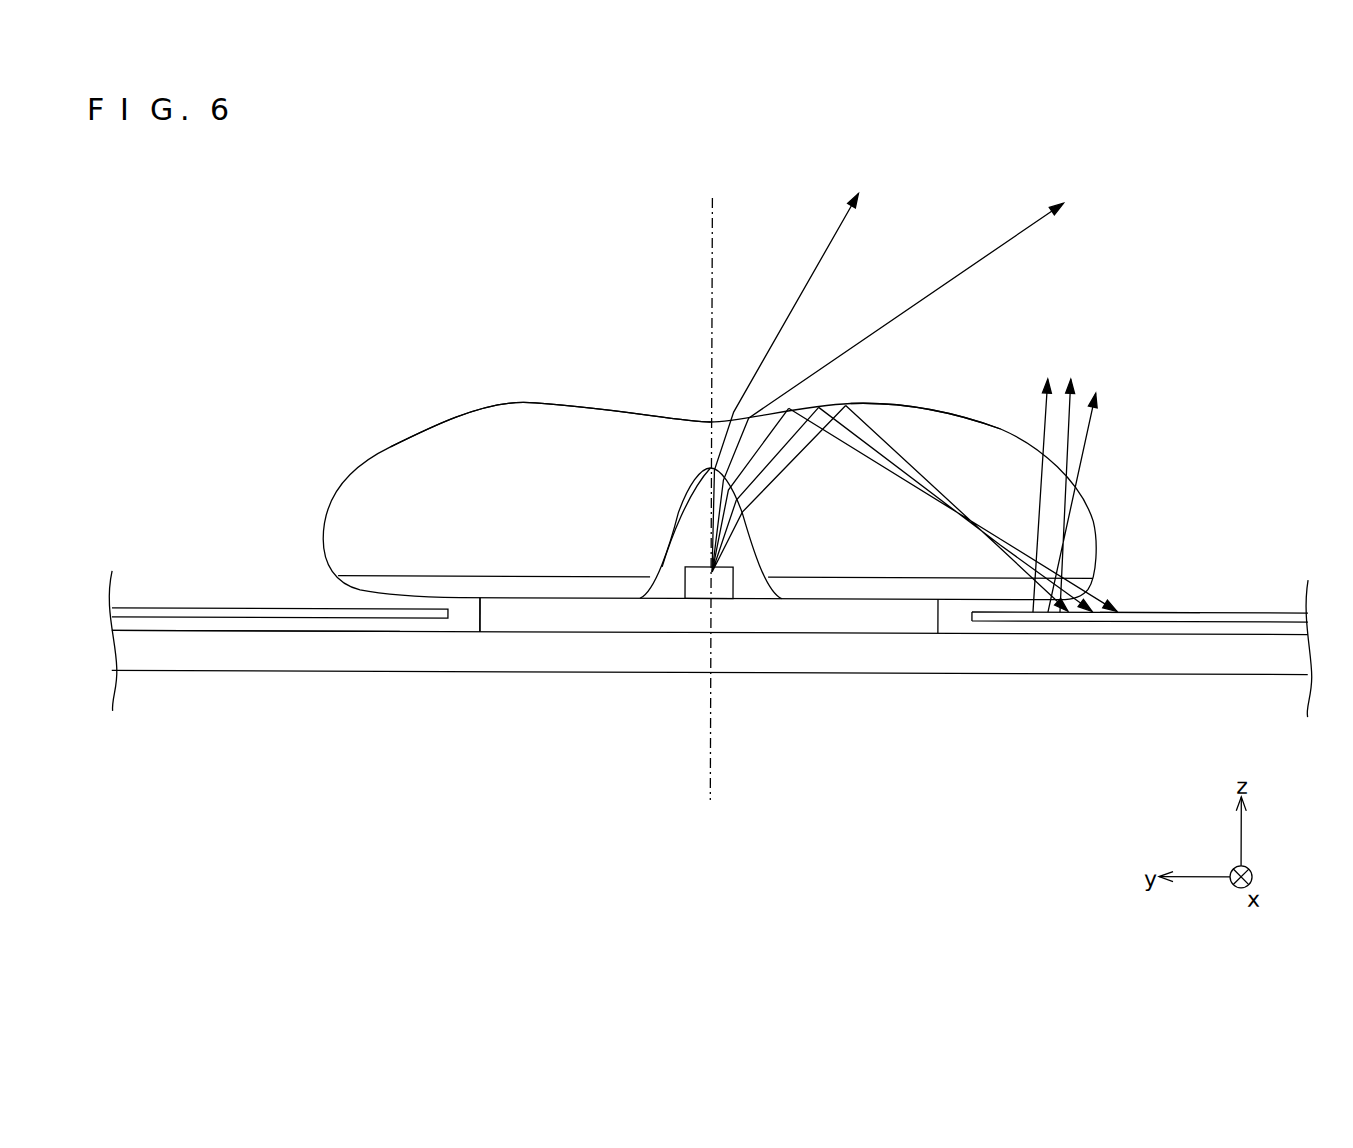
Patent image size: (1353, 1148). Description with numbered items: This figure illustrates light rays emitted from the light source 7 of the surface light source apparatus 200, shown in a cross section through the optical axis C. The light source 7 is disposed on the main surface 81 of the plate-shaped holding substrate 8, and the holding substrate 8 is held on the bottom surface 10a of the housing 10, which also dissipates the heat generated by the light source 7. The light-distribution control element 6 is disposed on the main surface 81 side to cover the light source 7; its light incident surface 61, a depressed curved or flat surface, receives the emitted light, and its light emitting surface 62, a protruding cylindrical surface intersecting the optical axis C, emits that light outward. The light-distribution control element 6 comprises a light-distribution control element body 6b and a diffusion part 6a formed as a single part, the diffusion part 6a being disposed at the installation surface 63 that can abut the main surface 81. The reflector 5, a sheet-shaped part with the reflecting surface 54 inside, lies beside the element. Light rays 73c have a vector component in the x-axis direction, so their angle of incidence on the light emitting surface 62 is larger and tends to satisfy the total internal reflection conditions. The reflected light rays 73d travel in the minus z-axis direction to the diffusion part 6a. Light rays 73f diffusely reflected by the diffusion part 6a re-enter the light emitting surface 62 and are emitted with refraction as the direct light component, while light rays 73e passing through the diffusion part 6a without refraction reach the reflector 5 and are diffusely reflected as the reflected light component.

The surface light source apparatus 200 is at (270, 262).
The optical axis C is at (713, 258).
The light-distribution control element 6 is at (347, 433).
The diffusion part 6a is at (545, 592).
The light-distribution control element body 6b is at (445, 435).
The light emitting surface 62 is at (942, 410).
The main surface 81 is at (672, 598).
The light source 7 is at (700, 590).
The light incident surface 61 is at (757, 570).
The holding substrate 8 is at (588, 622).
The installation surface 63 is at (500, 600).
The housing 10 is at (228, 658).
The bottom surface 10a is at (197, 631).
The reflector 5 is at (1170, 613).
The reflecting surface 54 is at (1247, 612).
The light rays 73c is at (786, 476).
The light rays 73d is at (917, 497).
The light rays 73e is at (1097, 590).
The light rays 73f is at (1103, 433).